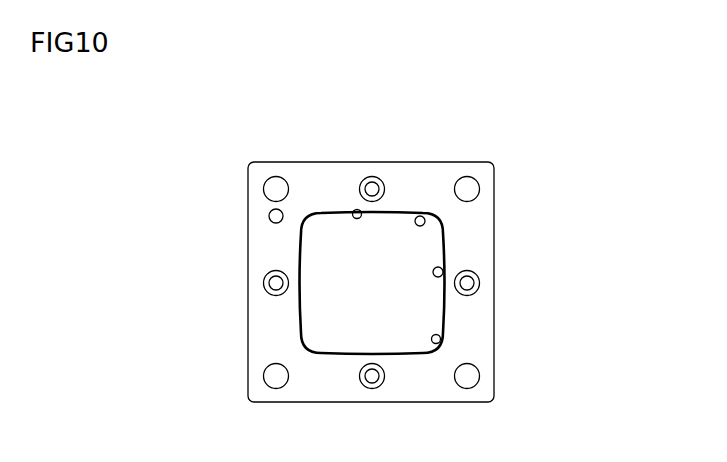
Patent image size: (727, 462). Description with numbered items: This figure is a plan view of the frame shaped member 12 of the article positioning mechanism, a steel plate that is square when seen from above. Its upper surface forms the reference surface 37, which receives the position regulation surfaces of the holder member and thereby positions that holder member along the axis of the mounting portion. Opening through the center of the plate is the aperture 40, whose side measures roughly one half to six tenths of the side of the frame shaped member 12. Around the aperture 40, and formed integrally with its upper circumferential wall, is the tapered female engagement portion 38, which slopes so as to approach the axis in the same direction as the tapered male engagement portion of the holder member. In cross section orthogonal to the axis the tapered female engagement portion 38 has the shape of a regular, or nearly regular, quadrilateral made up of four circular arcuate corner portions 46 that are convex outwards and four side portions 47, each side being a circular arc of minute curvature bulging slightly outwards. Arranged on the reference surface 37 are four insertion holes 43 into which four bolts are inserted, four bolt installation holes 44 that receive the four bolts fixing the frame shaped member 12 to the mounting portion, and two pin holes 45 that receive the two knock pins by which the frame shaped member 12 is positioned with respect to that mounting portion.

The frame shaped member 12 is at (495, 162).
The reference surface 37 is at (472, 236).
The tapered female engagement portion 38 is at (433, 240).
The aperture 40 is at (395, 320).
The insertion holes 43 is at (478, 190).
The bolt installation holes 44 is at (372, 188).
The pin holes 45 is at (272, 216).
The circular arcuate corner portions 46 is at (418, 216).
The side portions 47 is at (357, 212).